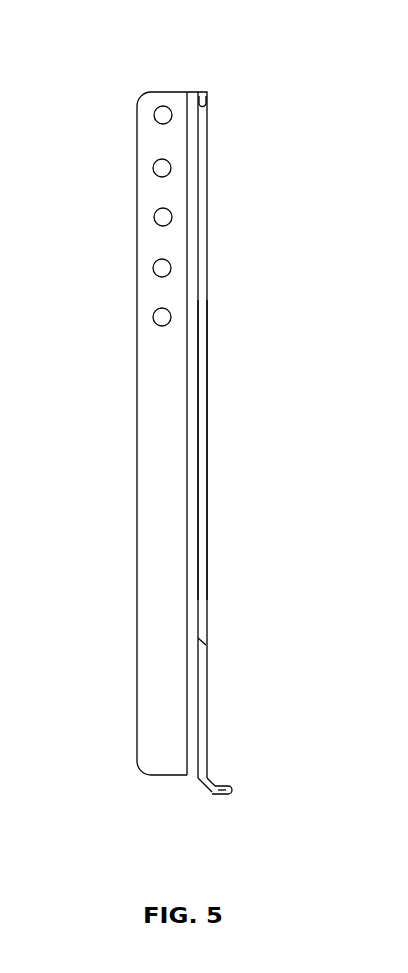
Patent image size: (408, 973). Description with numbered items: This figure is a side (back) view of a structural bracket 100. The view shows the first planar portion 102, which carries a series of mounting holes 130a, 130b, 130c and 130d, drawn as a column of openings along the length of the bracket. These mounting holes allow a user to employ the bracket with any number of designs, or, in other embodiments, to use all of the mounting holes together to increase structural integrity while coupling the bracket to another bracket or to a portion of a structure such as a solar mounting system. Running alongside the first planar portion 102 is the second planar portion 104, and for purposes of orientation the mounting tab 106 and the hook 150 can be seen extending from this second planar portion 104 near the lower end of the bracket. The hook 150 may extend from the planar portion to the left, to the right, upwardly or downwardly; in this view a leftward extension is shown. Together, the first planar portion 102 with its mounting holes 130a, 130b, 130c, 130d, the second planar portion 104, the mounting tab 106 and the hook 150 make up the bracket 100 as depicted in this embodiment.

The bracket 100 is at (214, 62).
The first planar portion 102 is at (162, 468).
The second planar portion 104 is at (207, 425).
The mounting tab 106 is at (209, 782).
The mounting hole 130a is at (154, 114).
The mounting hole 130b is at (153, 167).
The mounting hole 130c is at (154, 216).
The mounting hole 130d is at (153, 316).
The hook 150 is at (233, 791).